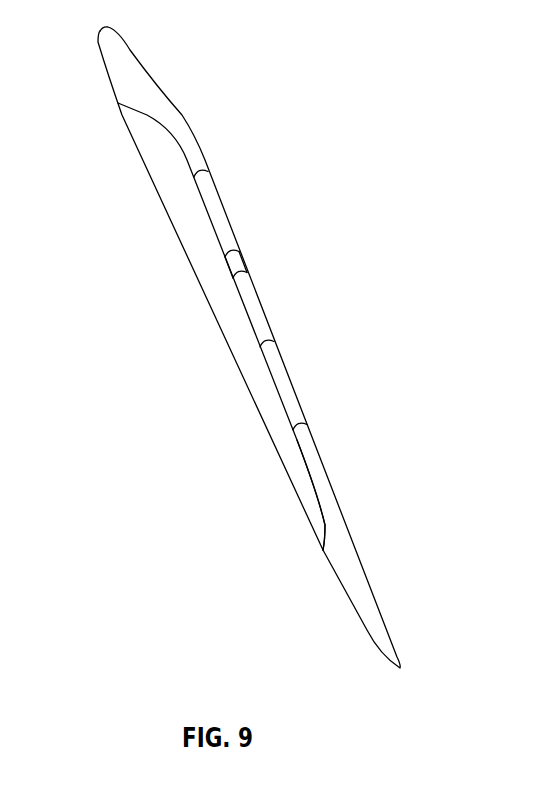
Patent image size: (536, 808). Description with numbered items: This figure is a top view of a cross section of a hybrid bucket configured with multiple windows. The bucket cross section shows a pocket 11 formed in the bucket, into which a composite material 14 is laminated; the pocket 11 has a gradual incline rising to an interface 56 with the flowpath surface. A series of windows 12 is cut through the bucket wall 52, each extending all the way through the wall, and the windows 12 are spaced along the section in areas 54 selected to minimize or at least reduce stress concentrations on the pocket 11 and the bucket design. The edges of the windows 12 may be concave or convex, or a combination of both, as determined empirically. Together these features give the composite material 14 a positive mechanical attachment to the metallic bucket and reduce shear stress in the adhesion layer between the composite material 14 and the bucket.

The pocket 11 is at (211, 306).
The window 12 is at (227, 204).
The composite material 14 is at (180, 227).
The bucket wall 52 is at (231, 257).
The areas 54 is at (237, 233).
The interface 56 is at (323, 551).